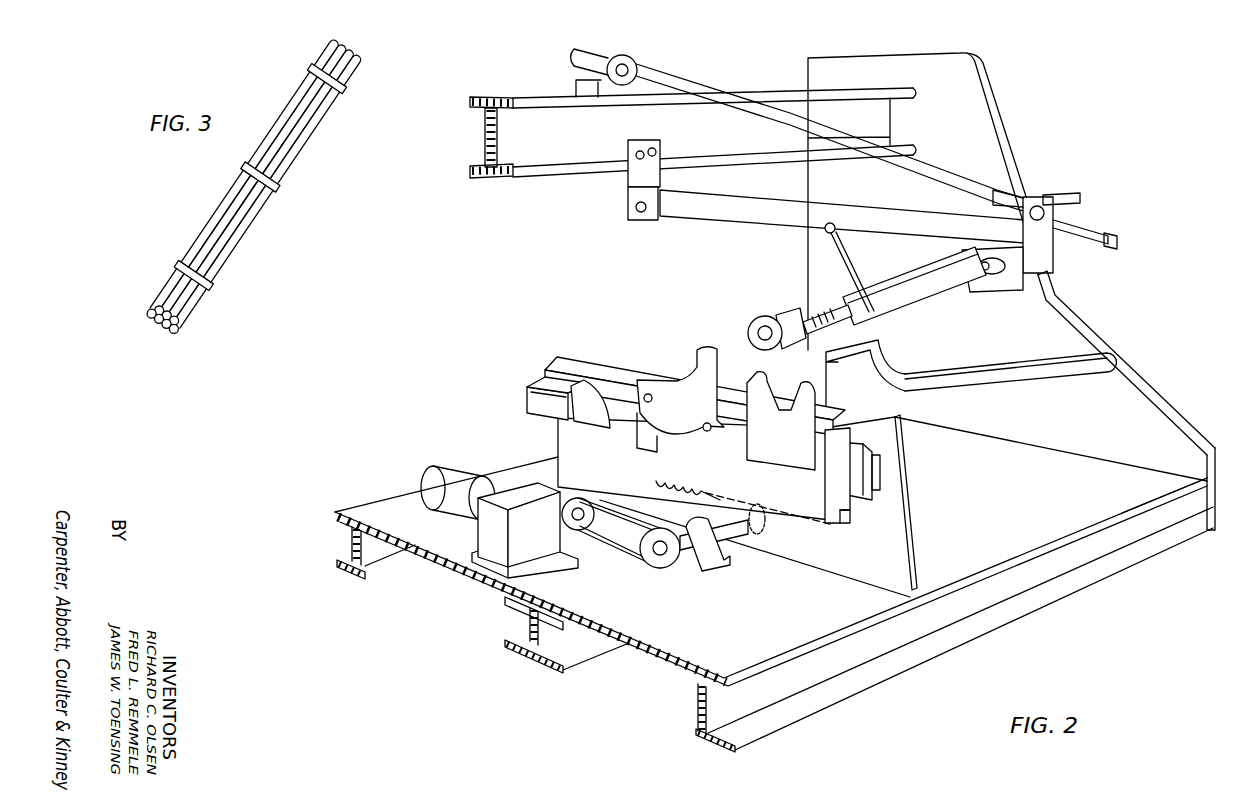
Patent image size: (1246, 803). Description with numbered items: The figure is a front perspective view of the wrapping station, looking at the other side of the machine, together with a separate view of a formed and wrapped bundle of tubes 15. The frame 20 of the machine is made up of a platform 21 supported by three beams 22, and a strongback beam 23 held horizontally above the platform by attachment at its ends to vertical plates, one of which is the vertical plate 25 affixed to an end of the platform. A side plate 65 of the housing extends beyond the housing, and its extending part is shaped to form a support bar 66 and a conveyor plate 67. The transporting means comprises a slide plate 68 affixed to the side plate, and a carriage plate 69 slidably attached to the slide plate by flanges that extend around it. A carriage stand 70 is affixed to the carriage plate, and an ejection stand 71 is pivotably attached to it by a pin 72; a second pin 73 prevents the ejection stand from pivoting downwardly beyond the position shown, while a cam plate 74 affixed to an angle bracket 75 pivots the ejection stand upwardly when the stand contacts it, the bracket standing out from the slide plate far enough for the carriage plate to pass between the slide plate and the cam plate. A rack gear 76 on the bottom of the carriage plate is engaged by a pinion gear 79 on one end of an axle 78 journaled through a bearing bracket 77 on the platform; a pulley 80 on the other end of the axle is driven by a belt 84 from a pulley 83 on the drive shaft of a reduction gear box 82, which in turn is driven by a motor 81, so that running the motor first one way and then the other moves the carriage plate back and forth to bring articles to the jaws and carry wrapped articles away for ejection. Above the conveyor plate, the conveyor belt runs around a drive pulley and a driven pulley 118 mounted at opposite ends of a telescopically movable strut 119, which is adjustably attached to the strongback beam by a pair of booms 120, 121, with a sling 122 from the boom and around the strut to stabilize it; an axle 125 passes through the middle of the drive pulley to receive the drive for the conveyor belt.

The rod bundle 15 is at (535, 409).
The frame 20 is at (1191, 420).
The platform 21 is at (1122, 503).
The beams 22 is at (392, 557).
The strongback beam 23 is at (549, 118).
The vertical plate 25 is at (1068, 342).
The side plate 65 is at (571, 450).
The support bar 66 is at (963, 380).
The conveyor plate 67 is at (863, 353).
The slide plate 68 is at (618, 398).
The carriage plate 69 is at (647, 443).
The carriage stand 70 is at (757, 444).
The ejection stand 71 is at (680, 427).
The pin 72 is at (652, 398).
The pin 73 is at (717, 430).
The cam plate 74 is at (582, 403).
The angle bracket 75 is at (556, 398).
The rack gear 76 is at (838, 527).
The bearing bracket 77 is at (722, 567).
The axle 78 is at (720, 523).
The pinion gear 79 is at (760, 527).
The pulley 80 is at (655, 562).
The motor 81 is at (437, 487).
The reduction gear box 82 is at (492, 538).
The pulley 83 is at (587, 520).
The belt 84 is at (600, 550).
The driven pulley 118 is at (748, 332).
The telescopically movable strut 119 is at (913, 292).
The boom 120 is at (945, 180).
The boom 121 is at (823, 217).
The sling 122 is at (846, 273).
The axle 125 is at (992, 268).